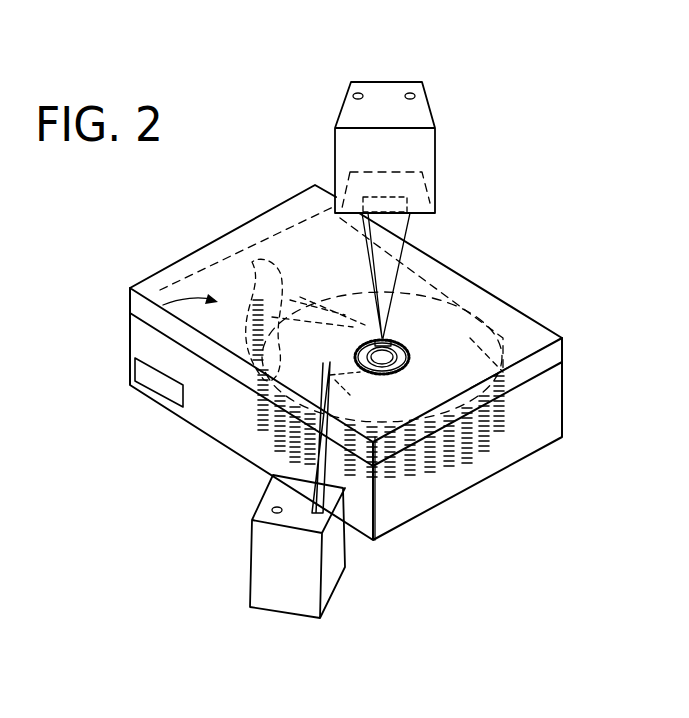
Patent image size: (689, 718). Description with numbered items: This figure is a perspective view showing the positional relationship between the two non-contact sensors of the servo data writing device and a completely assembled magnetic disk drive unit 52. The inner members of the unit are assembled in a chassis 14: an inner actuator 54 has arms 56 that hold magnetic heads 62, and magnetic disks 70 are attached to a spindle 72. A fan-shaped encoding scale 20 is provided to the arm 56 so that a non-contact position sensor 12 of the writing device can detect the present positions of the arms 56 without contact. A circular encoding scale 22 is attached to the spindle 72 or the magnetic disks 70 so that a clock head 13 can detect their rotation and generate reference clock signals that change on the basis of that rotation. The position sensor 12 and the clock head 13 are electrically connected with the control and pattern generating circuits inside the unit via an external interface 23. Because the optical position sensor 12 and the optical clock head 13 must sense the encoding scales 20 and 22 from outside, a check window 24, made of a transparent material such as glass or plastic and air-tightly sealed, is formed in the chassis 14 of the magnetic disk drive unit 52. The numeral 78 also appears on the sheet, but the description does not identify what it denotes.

The non-contact position sensor 12 is at (295, 598).
The clock head 13 is at (397, 97).
The chassis 14 is at (331, 414).
The fan-shaped encoding scale 20 is at (283, 367).
The circular encoding scale 22 is at (413, 382).
The external interface 23 is at (152, 378).
The check window 24 is at (470, 338).
The magnetic disk drive unit 52 is at (391, 313).
The inner actuator 54 is at (163, 305).
The arms 56 is at (305, 303).
The magnetic heads 62 is at (387, 333).
The magnetic disk 70 is at (554, 328).
The spindle 72 is at (409, 360).
The reference 78 is at (572, 709).